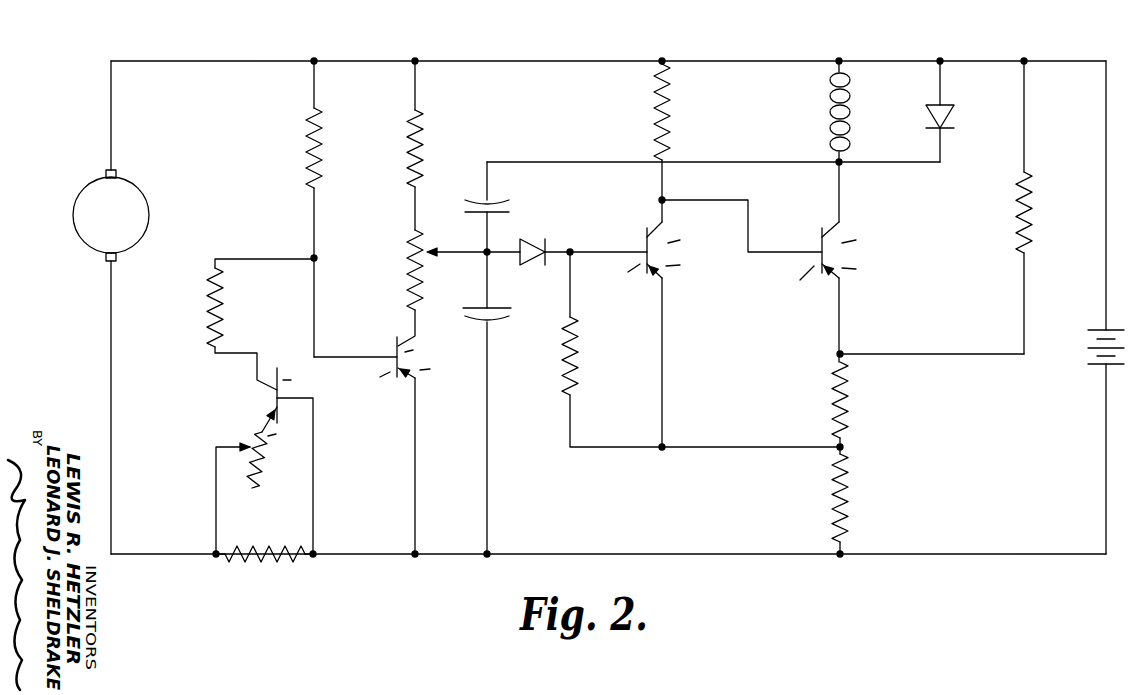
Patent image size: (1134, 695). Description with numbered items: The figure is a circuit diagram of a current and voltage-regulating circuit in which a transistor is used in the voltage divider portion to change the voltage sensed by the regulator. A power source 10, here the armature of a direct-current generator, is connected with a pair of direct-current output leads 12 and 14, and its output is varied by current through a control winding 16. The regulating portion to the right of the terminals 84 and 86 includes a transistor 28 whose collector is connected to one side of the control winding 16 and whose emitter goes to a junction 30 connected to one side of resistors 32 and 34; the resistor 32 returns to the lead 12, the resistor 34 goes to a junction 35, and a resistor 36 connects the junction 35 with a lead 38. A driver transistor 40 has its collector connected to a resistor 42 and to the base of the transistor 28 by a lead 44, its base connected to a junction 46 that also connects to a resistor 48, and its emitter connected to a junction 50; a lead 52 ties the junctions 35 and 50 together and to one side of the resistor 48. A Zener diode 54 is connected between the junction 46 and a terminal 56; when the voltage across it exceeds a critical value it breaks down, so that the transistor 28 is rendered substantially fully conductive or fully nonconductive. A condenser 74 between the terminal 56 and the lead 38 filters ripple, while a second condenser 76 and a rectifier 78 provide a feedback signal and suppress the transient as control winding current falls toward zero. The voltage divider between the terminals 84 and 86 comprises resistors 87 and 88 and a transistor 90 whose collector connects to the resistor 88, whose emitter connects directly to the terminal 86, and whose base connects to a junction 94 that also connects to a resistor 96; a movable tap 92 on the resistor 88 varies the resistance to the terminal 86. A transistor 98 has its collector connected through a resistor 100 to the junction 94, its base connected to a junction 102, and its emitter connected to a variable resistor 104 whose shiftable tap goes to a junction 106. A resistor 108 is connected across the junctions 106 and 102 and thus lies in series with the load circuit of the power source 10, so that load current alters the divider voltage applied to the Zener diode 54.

The power source 10 is at (148, 205).
The output lead 12 is at (180, 61).
The output lead 14 is at (111, 478).
The control winding 16 is at (828, 103).
The transistor 28 is at (816, 238).
The junction 30 is at (843, 351).
The resistor 32 is at (1032, 200).
The resistor 34 is at (848, 396).
The junction 35 is at (843, 444).
The resistor 36 is at (848, 492).
The lead 38 is at (625, 554).
The driver transistor 40 is at (643, 240).
The resistor 42 is at (668, 103).
The lead 44 is at (712, 200).
The junction 46 is at (572, 249).
The resistor 48 is at (578, 345).
The junction 50 is at (665, 444).
The lead 52 is at (742, 447).
The Zener diode 54 is at (538, 248).
The terminal 56 is at (490, 250).
The condenser 74 is at (498, 318).
The condenser 76 is at (478, 200).
The rectifier 78 is at (956, 110).
The terminal 84 is at (418, 58).
The terminal 86 is at (418, 551).
The resistor 87 is at (421, 145).
The resistor 88 is at (422, 272).
The transistor 90 is at (395, 345).
The movable tap 92 is at (428, 249).
The junction 94 is at (316, 256).
The resistor 96 is at (308, 142).
The transistor 98 is at (266, 398).
The resistor 100 is at (222, 300).
The junction 102 is at (316, 551).
The variable resistor 104 is at (260, 476).
The junction 106 is at (214, 551).
The resistor 108 is at (258, 550).